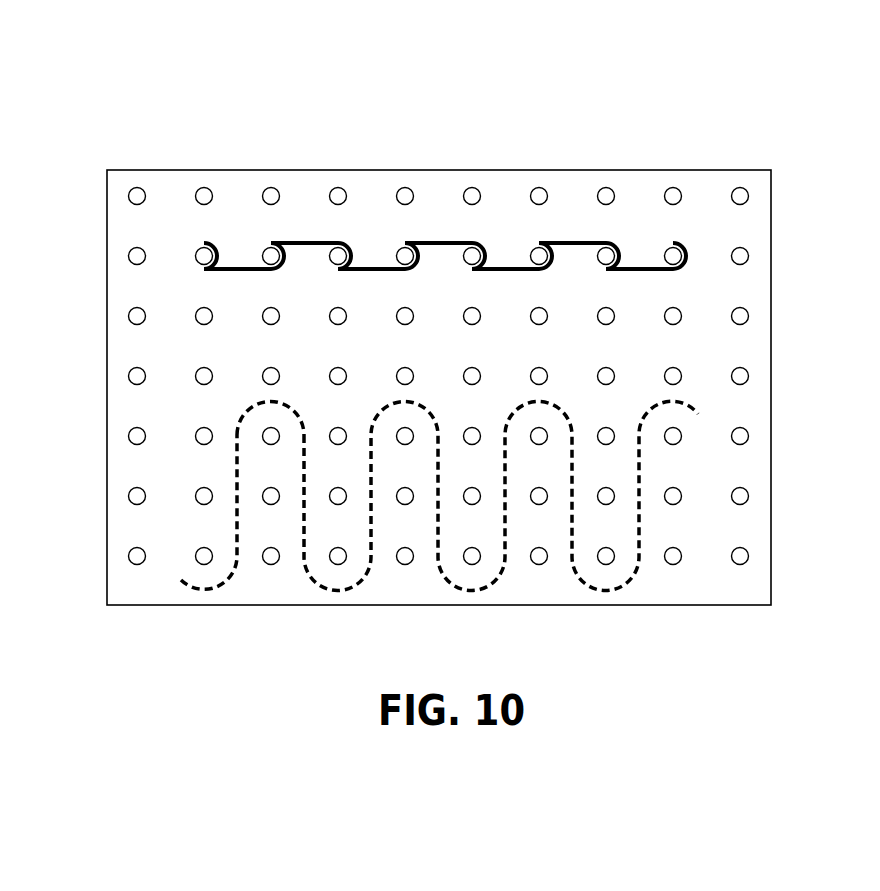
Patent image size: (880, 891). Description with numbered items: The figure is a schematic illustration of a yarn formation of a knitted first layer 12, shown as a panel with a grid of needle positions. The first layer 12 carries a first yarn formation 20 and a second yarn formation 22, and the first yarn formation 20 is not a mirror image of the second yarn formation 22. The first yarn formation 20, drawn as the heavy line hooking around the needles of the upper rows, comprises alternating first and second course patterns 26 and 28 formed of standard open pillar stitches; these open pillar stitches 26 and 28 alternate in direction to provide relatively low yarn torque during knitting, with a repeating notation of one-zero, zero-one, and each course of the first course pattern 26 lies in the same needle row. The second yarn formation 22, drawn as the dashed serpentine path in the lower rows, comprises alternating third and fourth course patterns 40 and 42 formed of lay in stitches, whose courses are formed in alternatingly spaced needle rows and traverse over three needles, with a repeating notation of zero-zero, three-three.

The first layer 12 is at (204, 82).
The first yarn formation 20 is at (200, 233).
The second yarn formation 22 is at (177, 590).
The first course pattern 26 is at (220, 240).
The second course pattern 28 is at (280, 238).
The third course pattern 40 is at (205, 580).
The fourth course pattern 42 is at (235, 422).